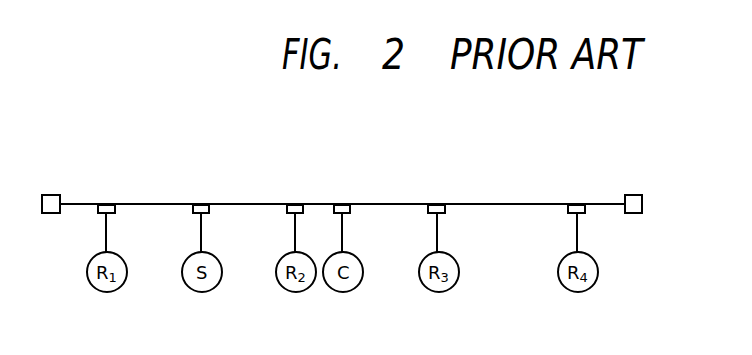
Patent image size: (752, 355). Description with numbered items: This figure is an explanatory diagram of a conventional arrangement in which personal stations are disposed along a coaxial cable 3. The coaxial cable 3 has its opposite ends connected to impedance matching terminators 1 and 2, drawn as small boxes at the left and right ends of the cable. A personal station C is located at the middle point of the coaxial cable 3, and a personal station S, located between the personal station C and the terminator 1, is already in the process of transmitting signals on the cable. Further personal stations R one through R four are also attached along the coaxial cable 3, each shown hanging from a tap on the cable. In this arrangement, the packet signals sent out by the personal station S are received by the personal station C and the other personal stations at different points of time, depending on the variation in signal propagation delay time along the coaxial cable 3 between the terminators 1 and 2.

The impedance matching terminator 1 is at (50, 195).
The impedance matching terminator 2 is at (633, 195).
The coaxial cable 3 is at (513, 202).